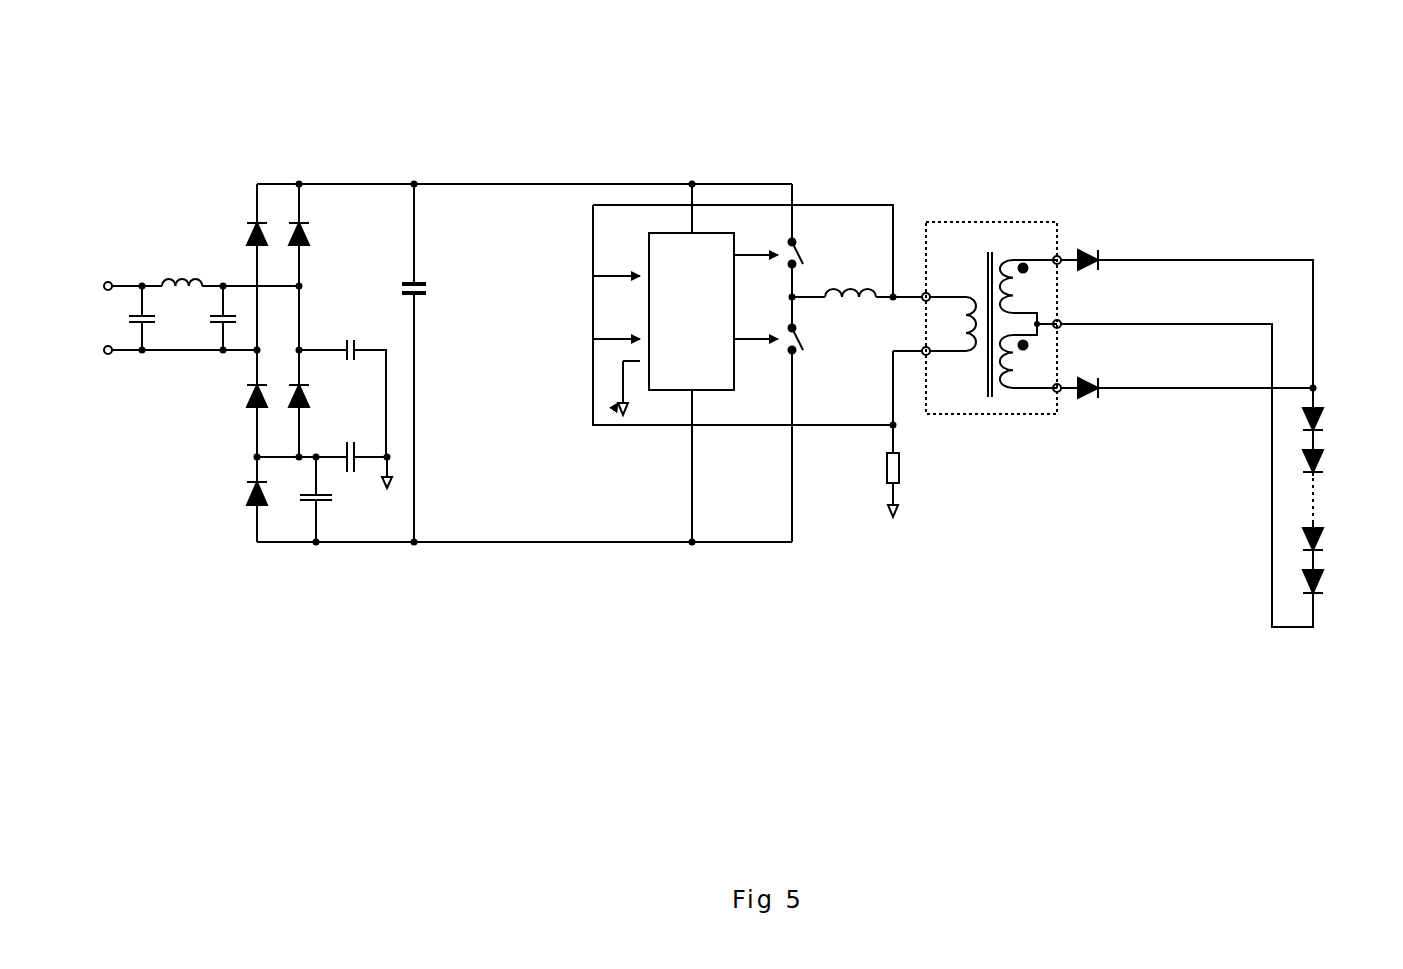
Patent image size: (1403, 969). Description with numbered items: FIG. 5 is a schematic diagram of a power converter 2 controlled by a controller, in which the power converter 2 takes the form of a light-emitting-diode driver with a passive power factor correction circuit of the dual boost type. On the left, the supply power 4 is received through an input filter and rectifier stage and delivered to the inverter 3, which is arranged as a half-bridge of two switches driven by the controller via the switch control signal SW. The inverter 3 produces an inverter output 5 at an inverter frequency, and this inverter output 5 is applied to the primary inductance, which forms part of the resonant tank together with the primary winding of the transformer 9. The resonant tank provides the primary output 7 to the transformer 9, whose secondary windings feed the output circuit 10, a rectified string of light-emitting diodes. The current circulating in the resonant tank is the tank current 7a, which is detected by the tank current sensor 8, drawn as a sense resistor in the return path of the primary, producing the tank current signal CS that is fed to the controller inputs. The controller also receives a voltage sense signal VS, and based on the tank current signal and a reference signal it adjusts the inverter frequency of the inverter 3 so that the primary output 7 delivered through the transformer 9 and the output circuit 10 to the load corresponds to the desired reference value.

The power converter 2 is at (1147, 105).
The supply power 4 is at (488, 182).
The inverter 3 is at (818, 246).
The inverter output 5 is at (813, 308).
The primary output 7 is at (902, 290).
The tank current 7a is at (906, 370).
The tank current sensor 8 is at (906, 482).
The transformer 9 is at (930, 295).
The output circuit 10 is at (1120, 547).